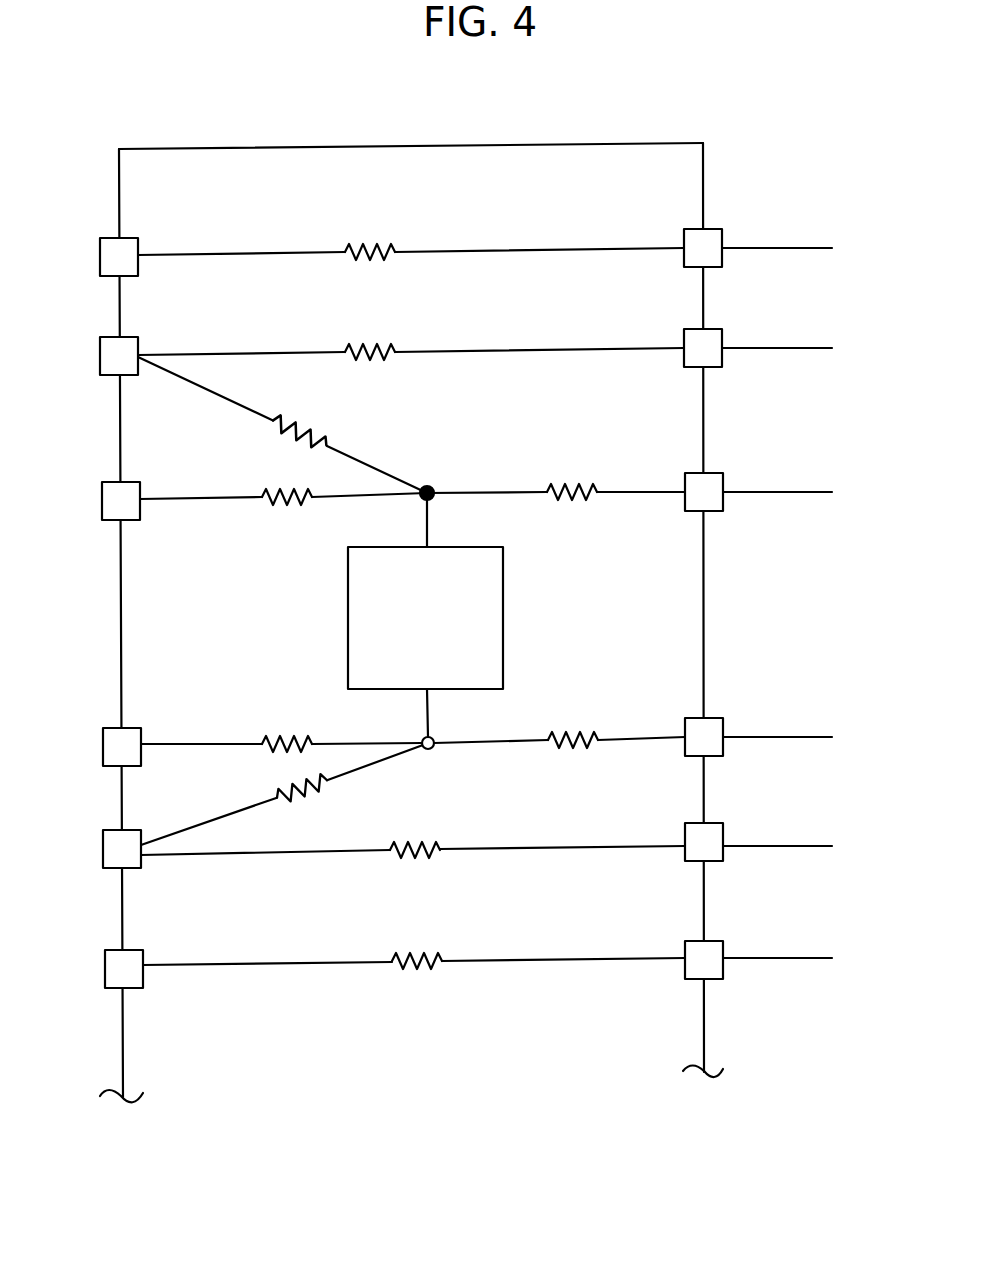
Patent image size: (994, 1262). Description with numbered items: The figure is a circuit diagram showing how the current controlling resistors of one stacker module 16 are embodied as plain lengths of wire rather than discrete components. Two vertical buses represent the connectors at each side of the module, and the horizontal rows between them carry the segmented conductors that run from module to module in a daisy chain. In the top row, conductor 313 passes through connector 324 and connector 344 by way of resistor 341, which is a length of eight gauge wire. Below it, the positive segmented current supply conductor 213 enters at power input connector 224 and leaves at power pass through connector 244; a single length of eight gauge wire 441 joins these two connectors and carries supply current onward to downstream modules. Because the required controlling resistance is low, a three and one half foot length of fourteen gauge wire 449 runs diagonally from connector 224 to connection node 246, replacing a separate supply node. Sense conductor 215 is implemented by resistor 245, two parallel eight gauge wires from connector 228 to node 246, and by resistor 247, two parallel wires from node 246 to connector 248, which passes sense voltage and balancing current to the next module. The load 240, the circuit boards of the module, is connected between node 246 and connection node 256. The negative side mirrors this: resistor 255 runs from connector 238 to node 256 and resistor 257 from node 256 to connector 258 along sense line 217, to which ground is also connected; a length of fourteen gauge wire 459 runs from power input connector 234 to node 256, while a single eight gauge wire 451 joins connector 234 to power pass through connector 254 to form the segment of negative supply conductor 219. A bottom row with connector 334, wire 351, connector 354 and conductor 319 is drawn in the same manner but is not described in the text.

The stacker module 16 is at (120, 602).
The connector 324 is at (100, 245).
The power input connector 224 is at (100, 345).
The connector 228 is at (100, 490).
The connector 238 is at (101, 733).
The power input connector 234 is at (102, 836).
The switching element 334 is at (103, 953).
The connector 344 is at (722, 238).
The power pass through connector 244 is at (722, 338).
The connector 248 is at (723, 482).
The connector 258 is at (723, 725).
The power pass through connector 254 is at (723, 829).
The switching element 354 is at (723, 945).
The resistor 341 is at (368, 256).
The length of eight gauge wire 441 is at (368, 356).
The length of fourteen gauge wire 449 is at (310, 433).
The resistor 245 is at (298, 500).
The resistor 247 is at (587, 498).
The resistor 255 is at (282, 733).
The resistor 257 is at (588, 745).
The length of fourteen gauge wire 459 is at (300, 792).
The length of eight gauge wire 451 is at (423, 858).
The resistor 351 is at (427, 967).
The connection node 246 is at (433, 486).
The connection node 256 is at (433, 748).
The load 240 is at (402, 639).
The conductor 313 is at (816, 248).
The segmented current supply conductor 213 is at (816, 348).
The sense conductor 215 is at (816, 492).
The sense line 217 is at (816, 737).
The segmented current supply conductor 219 is at (816, 846).
The output line 319 is at (816, 958).